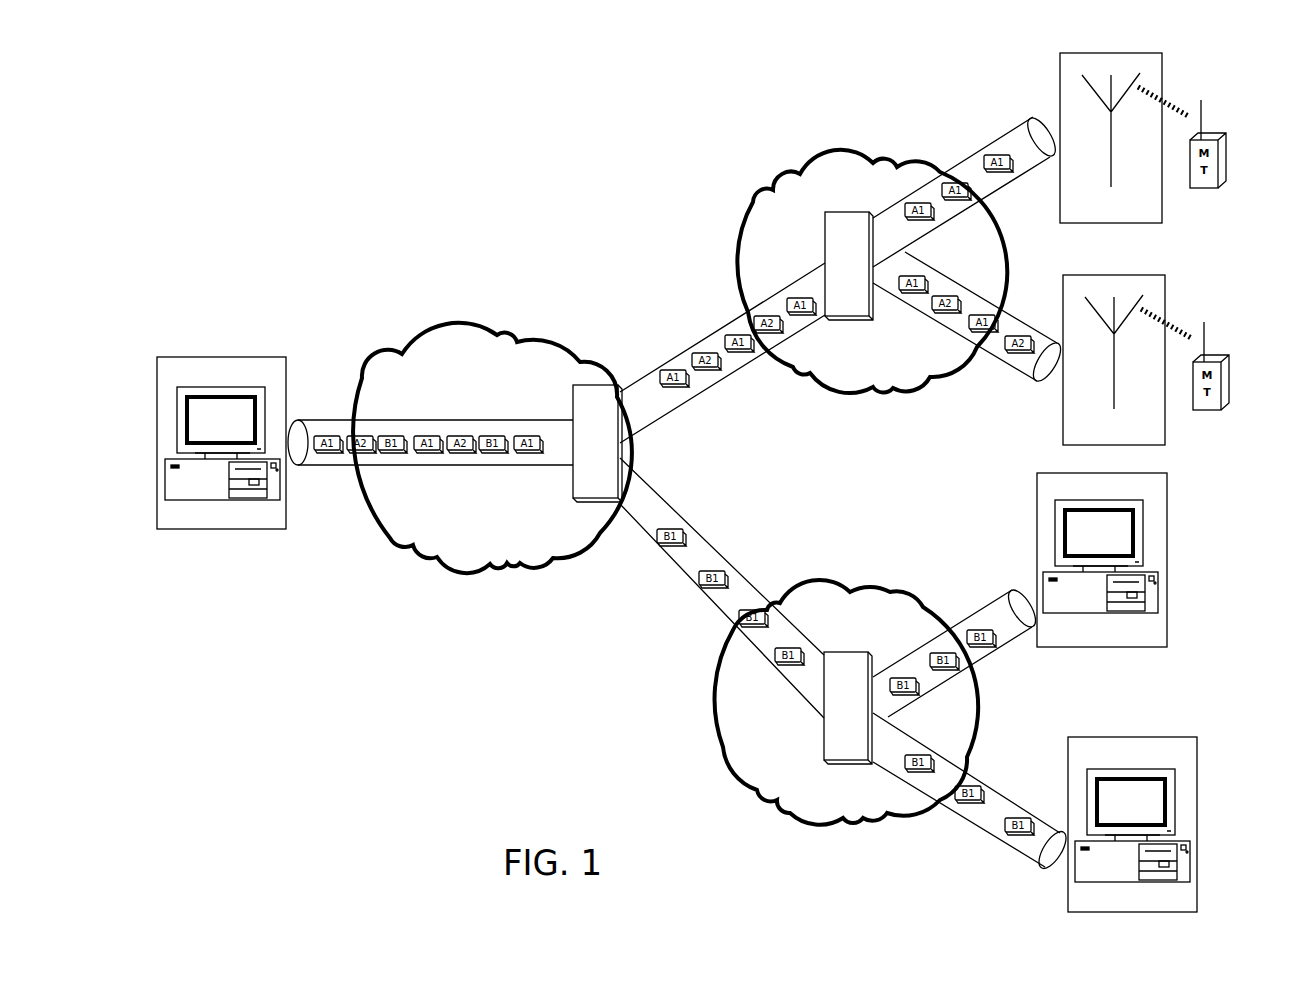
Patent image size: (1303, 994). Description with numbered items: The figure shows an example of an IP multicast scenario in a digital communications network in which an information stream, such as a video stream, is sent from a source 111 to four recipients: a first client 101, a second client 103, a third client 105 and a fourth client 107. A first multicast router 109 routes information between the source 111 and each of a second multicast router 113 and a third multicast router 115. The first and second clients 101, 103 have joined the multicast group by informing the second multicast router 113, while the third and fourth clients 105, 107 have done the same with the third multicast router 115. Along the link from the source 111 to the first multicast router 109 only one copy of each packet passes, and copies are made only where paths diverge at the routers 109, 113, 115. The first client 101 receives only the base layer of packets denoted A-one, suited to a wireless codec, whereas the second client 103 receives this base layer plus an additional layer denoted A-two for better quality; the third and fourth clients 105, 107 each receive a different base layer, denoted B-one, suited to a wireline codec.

The first client 101 is at (1163, 80).
The second client 103 is at (1165, 302).
The third client 105 is at (1167, 508).
The fourth client 107 is at (1197, 772).
The first multicast router (MR1) 109 is at (583, 385).
The source 111 is at (186, 357).
The second multicast router (MR2) 113 is at (838, 212).
The third multicast router (MR3) 115 is at (838, 652).